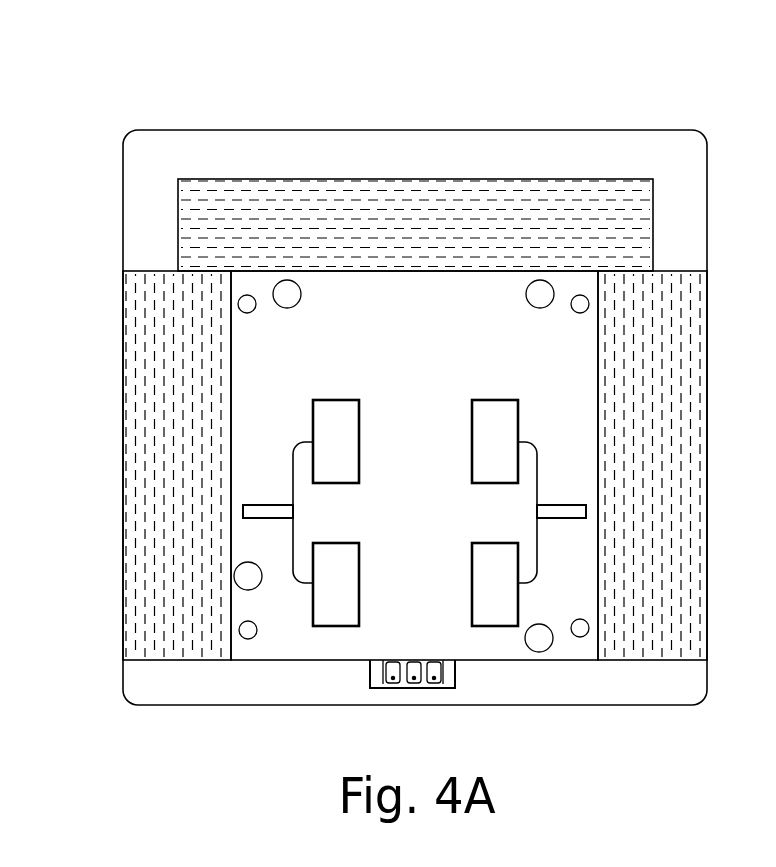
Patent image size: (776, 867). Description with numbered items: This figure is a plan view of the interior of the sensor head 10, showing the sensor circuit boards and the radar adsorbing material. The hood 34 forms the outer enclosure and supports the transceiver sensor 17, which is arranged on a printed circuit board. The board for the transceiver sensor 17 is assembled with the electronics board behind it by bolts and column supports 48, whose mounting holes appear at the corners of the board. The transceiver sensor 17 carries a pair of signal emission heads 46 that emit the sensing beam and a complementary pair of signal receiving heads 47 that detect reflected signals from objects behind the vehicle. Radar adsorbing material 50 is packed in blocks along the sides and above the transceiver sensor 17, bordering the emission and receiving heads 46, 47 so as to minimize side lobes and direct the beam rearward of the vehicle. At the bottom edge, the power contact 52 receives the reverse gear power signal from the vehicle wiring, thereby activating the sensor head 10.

The sensor head 10 is at (418, 405).
The hood 34 is at (706, 133).
The radar adsorbing material (RAM) 50 is at (365, 214).
The transceiver sensor 17 is at (411, 324).
The column supports 48 is at (296, 303).
The signal emission heads 46 is at (341, 447).
The signal receiving heads 47 is at (484, 448).
The power contact 52 is at (455, 672).